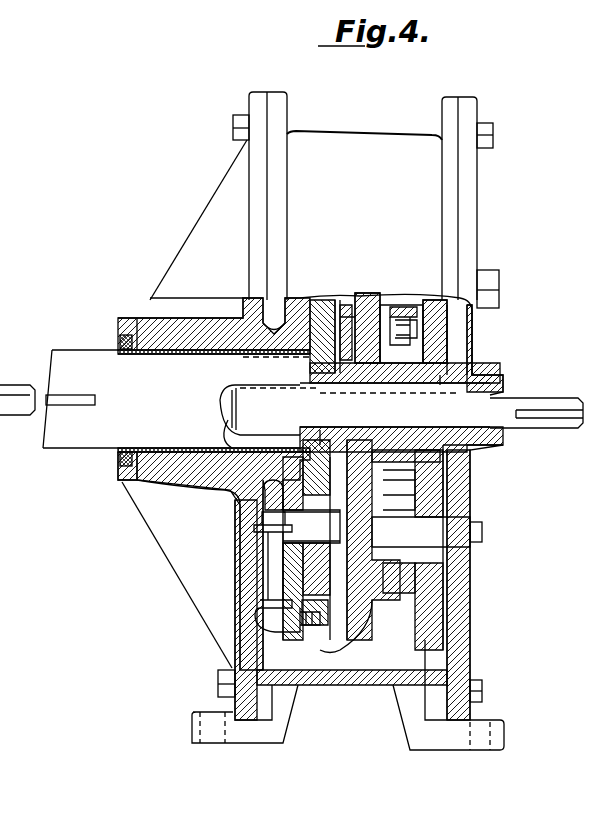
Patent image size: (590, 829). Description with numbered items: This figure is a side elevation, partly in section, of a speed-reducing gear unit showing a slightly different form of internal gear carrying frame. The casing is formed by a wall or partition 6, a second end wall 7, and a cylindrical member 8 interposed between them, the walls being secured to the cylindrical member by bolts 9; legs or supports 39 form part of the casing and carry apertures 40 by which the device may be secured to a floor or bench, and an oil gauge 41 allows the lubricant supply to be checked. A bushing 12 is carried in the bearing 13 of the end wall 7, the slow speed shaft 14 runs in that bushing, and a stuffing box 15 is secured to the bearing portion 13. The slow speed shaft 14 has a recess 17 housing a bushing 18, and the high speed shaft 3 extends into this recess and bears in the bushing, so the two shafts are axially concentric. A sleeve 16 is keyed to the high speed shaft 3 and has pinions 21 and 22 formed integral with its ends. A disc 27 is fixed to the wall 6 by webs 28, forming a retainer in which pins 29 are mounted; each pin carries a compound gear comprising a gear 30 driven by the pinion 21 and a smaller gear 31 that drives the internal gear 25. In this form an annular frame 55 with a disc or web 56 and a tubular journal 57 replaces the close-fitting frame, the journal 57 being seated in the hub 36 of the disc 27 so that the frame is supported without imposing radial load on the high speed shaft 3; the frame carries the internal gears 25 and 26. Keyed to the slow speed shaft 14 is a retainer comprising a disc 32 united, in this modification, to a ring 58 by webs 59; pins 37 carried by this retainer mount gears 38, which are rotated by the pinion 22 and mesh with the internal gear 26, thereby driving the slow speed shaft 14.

The high speed shaft 3 is at (10, 380).
The wall or partition 6 is at (466, 197).
The second end wall 7 is at (262, 163).
The cylindrical member 8 is at (340, 147).
The bolts 9 is at (242, 118).
The bushing 12 is at (157, 486).
The bearing 13 is at (140, 480).
The slow speed shaft 14 is at (73, 355).
The stuffing box 15 is at (118, 470).
The sleeve 16 is at (386, 383).
The recess 17 is at (222, 412).
The bushing 18 is at (232, 394).
The pinion 21 is at (440, 378).
The pinion 22 is at (288, 411).
The internal gear 25 is at (415, 576).
The internal gear 26 is at (318, 630).
The disc 27 is at (382, 293).
The webs 28 is at (455, 323).
The pins 29 is at (427, 532).
The gear 30 is at (472, 363).
The gear 31 is at (403, 308).
The disc 32 is at (300, 298).
The bearing (hub) 36 is at (418, 330).
The pins 37 is at (311, 526).
The gears 38 is at (320, 330).
The legs or supports 39 is at (268, 745).
The apertures 40 is at (212, 745).
The oil gauge 41 is at (200, 563).
The annular frame 55 is at (372, 632).
The disc or web 56 is at (360, 525).
The tubular journal 57 is at (470, 470).
The ring 58 is at (318, 566).
The webs 59 is at (330, 400).